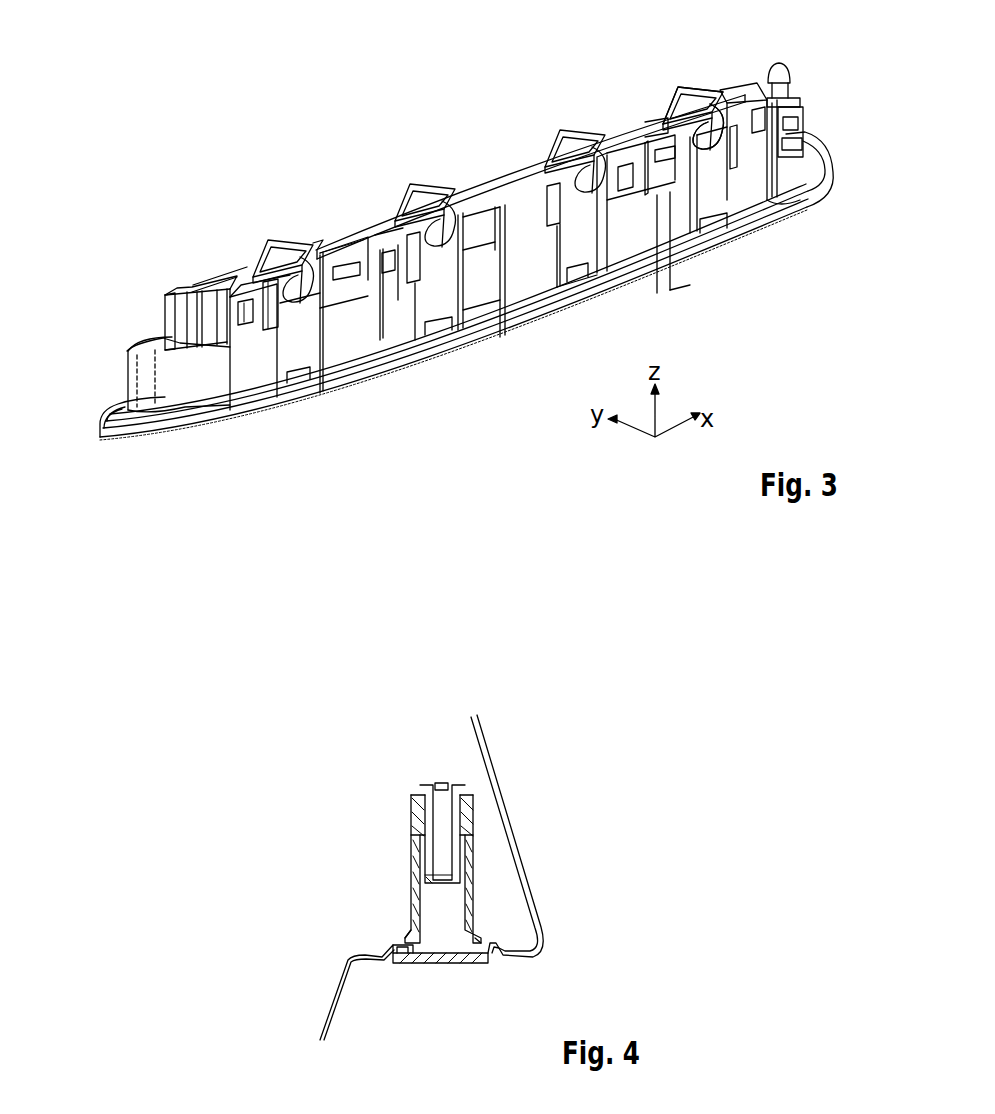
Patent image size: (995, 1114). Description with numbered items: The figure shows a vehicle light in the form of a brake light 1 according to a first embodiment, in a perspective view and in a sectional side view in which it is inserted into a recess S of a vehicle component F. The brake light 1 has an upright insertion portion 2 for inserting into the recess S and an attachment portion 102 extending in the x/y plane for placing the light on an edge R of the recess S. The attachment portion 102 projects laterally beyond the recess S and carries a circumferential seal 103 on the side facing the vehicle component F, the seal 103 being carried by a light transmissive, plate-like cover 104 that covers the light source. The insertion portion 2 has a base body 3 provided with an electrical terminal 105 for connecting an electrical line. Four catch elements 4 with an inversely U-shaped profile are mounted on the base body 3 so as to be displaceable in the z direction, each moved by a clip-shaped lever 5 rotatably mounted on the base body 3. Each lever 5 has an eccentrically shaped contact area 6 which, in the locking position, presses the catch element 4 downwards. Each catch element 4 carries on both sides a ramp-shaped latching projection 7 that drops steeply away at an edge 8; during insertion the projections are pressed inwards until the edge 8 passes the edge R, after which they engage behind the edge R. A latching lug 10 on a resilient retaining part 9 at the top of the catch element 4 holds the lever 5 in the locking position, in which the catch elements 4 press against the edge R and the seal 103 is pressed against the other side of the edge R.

In FIG. 3, the brake light 1 is at (326, 143).
In FIG. 3, the insertion portion 2 is at (92, 262).
In FIG. 3, the base body 3 is at (208, 398).
In FIG. 4, the base body 3 is at (420, 860).
In FIG. 3, the catch element 4 is at (297, 365).
In FIG. 3, the lever 5 is at (270, 244).
In FIG. 4, the lever 5 is at (411, 802).
In FIG. 3, the contact area 6 is at (445, 258).
In FIG. 4, the contact area 6 is at (411, 830).
In FIG. 4, the latching projection 7 is at (406, 932).
In FIG. 4, the edge 8 is at (490, 963).
In FIG. 3, the resilient retaining part 9 is at (692, 97).
In FIG. 3, the latching lug 10 is at (712, 104).
In FIG. 3, the attachment portion 102 is at (92, 408).
In FIG. 3, the seal 103 is at (153, 432).
In FIG. 4, the seal 103 is at (396, 960).
In FIG. 3, the cover 104 is at (346, 395).
In FIG. 4, the cover 104 is at (458, 963).
In FIG. 3, the electrical terminal 105 is at (780, 60).
In FIG. 4, the edge R is at (418, 948).
In FIG. 4, the recess S is at (443, 942).
In FIG. 4, the vehicle component F is at (522, 855).